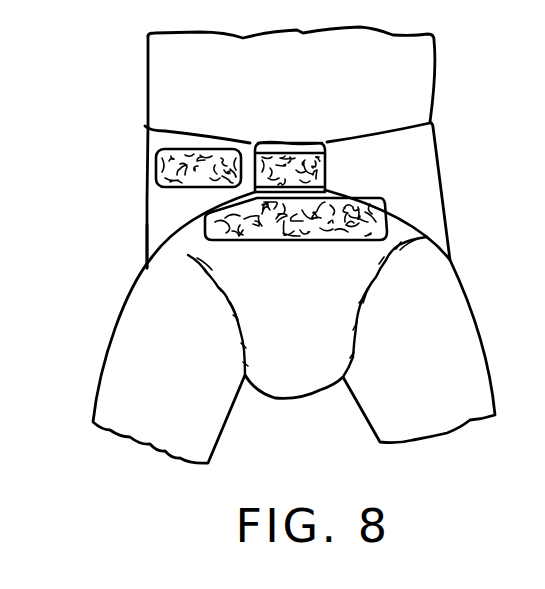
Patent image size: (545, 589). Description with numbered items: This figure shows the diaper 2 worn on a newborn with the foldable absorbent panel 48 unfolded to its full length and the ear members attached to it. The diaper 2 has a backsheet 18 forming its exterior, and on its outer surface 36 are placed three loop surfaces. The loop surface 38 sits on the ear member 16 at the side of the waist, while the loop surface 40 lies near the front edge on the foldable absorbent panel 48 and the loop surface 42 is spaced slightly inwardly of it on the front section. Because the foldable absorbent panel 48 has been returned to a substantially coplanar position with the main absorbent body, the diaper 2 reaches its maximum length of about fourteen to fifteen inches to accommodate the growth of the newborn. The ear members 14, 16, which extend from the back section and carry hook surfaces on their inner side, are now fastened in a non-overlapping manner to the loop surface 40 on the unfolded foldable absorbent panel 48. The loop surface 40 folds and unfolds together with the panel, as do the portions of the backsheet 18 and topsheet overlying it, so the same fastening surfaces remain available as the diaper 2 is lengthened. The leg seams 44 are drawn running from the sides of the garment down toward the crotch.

The garment 2 is at (80, 169).
The upper body portion 14 is at (362, 152).
The waistband 16 is at (247, 142).
The side seam 18 is at (158, 230).
The side portion 36 is at (152, 195).
The side absorbent panel 38 is at (157, 162).
The front absorbent strip 40 is at (293, 153).
The absorbent pad 42 is at (290, 243).
The leg seam 44 is at (220, 293).
The fastener strip 48 is at (313, 143).